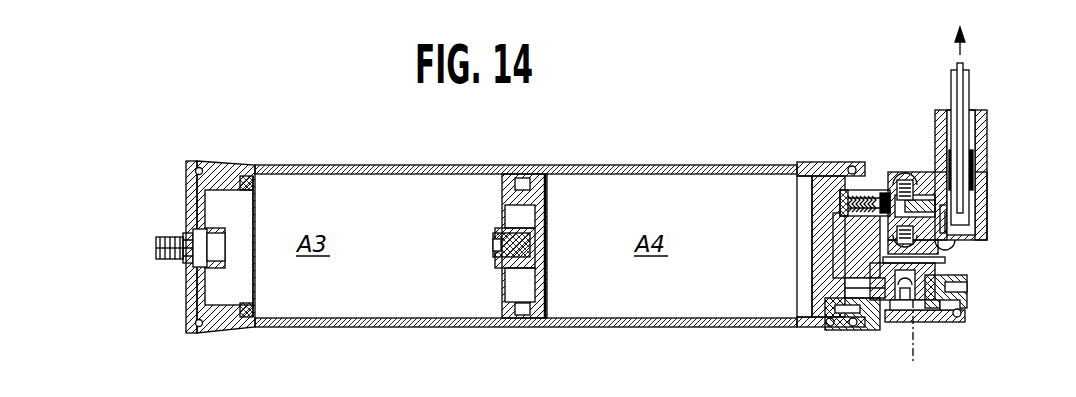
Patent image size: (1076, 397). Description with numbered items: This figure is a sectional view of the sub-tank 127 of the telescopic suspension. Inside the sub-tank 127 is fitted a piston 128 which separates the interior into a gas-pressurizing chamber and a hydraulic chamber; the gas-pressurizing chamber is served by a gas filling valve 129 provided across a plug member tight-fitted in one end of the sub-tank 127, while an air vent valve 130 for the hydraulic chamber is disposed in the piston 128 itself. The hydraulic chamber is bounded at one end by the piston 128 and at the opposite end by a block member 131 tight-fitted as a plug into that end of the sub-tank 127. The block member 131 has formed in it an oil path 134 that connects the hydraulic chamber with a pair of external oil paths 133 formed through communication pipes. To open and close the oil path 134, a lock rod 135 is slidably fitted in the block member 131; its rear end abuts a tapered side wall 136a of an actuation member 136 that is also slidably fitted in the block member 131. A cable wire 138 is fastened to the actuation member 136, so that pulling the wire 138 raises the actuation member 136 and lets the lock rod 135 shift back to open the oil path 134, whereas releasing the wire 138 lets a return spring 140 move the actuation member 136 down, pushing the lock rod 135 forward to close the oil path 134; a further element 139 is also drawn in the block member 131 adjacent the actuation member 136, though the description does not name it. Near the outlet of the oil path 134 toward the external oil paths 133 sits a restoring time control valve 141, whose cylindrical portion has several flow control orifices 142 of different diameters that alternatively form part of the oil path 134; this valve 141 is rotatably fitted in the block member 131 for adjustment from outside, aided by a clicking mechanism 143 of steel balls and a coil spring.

The sub-tank 127 is at (637, 162).
The piston 128 is at (538, 176).
The gas filling valve 129 is at (165, 262).
The air vent valve 130 is at (492, 247).
The block member 131 is at (820, 172).
The external oil path 133 is at (915, 360).
The oil path 134 is at (840, 325).
The lock rod 135 is at (846, 172).
The actuation member 136 is at (988, 212).
The tapered side wall 136a is at (948, 242).
The cable wire 138 is at (987, 175).
The screw 139 is at (886, 188).
The return spring 140 is at (990, 150).
The restoring time control valve 141 is at (968, 290).
The flow control orifice 142 is at (892, 322).
The clicking mechanism 143 is at (968, 313).